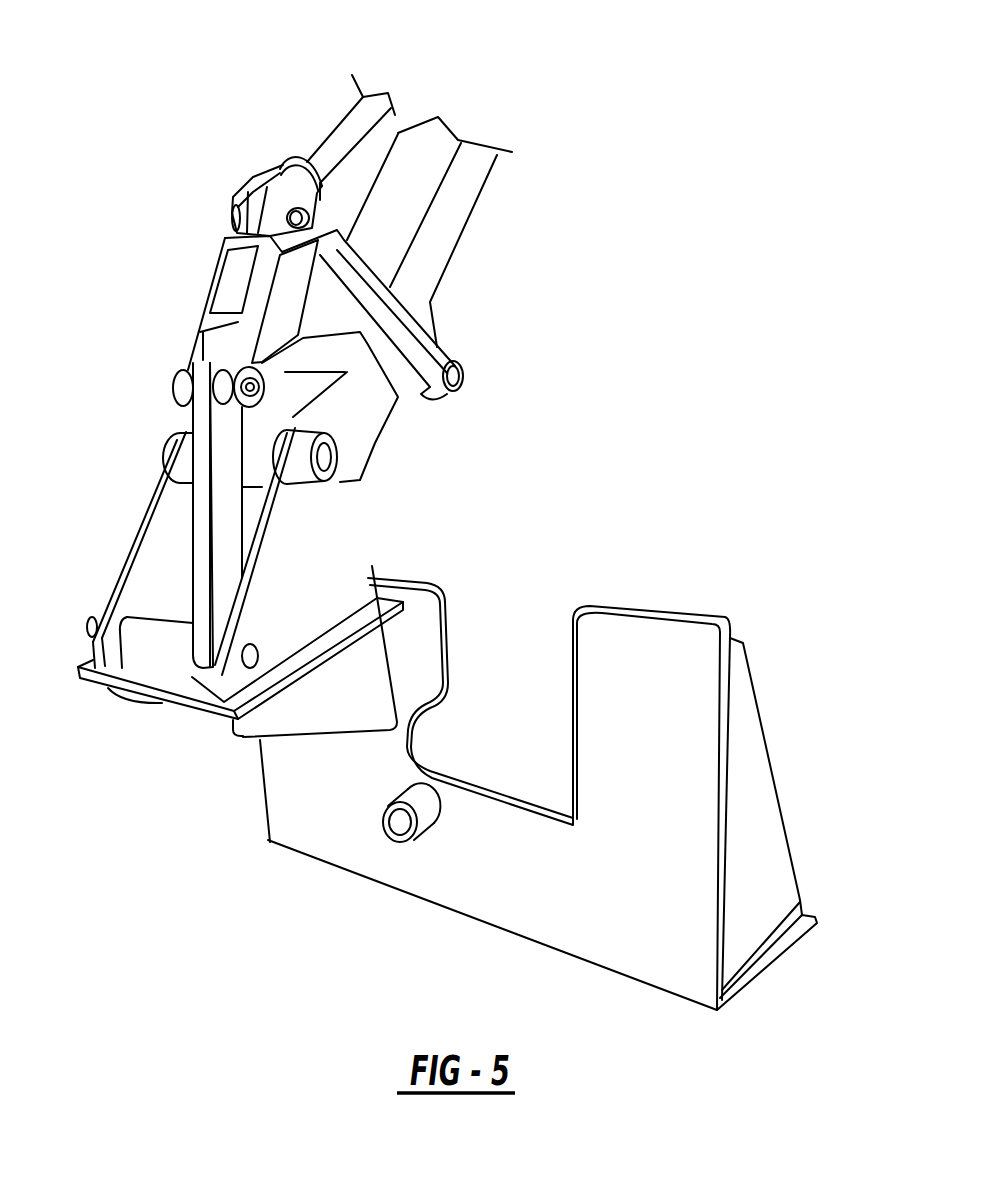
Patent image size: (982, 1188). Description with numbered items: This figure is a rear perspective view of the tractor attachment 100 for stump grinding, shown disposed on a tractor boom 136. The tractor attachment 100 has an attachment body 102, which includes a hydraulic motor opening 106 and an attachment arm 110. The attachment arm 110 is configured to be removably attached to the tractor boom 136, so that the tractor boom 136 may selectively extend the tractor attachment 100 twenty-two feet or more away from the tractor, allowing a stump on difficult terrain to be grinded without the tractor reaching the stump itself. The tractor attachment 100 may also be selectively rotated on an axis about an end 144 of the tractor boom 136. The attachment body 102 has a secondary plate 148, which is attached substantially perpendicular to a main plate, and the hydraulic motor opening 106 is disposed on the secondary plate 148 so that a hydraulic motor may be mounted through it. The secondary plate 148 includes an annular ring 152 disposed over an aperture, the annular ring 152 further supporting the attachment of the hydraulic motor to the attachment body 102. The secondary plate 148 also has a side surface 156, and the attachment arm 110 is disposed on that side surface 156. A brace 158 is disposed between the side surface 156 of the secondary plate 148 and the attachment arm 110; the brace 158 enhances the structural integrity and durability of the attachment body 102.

The tractor attachment 100 is at (462, 577).
The attachment body 102 is at (545, 823).
The hydraulic motor opening 106 is at (512, 760).
The attachment arm 110 is at (140, 527).
The tractor boom 136 is at (478, 197).
The end of the tractor boom 144 is at (382, 453).
The secondary plate 148 is at (638, 980).
The annular ring 152 is at (385, 830).
The side surface 156 is at (567, 908).
The brace 158 is at (230, 735).